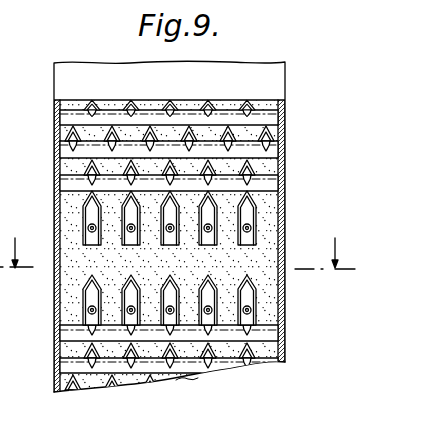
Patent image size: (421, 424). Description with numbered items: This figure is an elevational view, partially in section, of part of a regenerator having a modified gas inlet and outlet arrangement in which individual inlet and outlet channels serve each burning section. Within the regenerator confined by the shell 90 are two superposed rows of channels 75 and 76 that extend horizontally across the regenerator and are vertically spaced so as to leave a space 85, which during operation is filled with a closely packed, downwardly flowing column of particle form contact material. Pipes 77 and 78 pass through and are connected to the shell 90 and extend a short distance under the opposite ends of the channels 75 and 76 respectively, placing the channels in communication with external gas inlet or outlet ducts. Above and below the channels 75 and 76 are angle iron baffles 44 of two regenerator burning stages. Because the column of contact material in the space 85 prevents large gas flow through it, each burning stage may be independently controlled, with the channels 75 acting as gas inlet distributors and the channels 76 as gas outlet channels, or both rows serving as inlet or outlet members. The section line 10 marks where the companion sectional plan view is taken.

The section line 10— 10 is at (177, 245).
The angle iron baffles 44 is at (272, 138).
The channels 75 is at (258, 216).
The channels 76 is at (85, 312).
The pipes 77 is at (88, 226).
The pipes 78 is at (250, 312).
The space 85 is at (255, 265).
The shell 90 is at (55, 131).